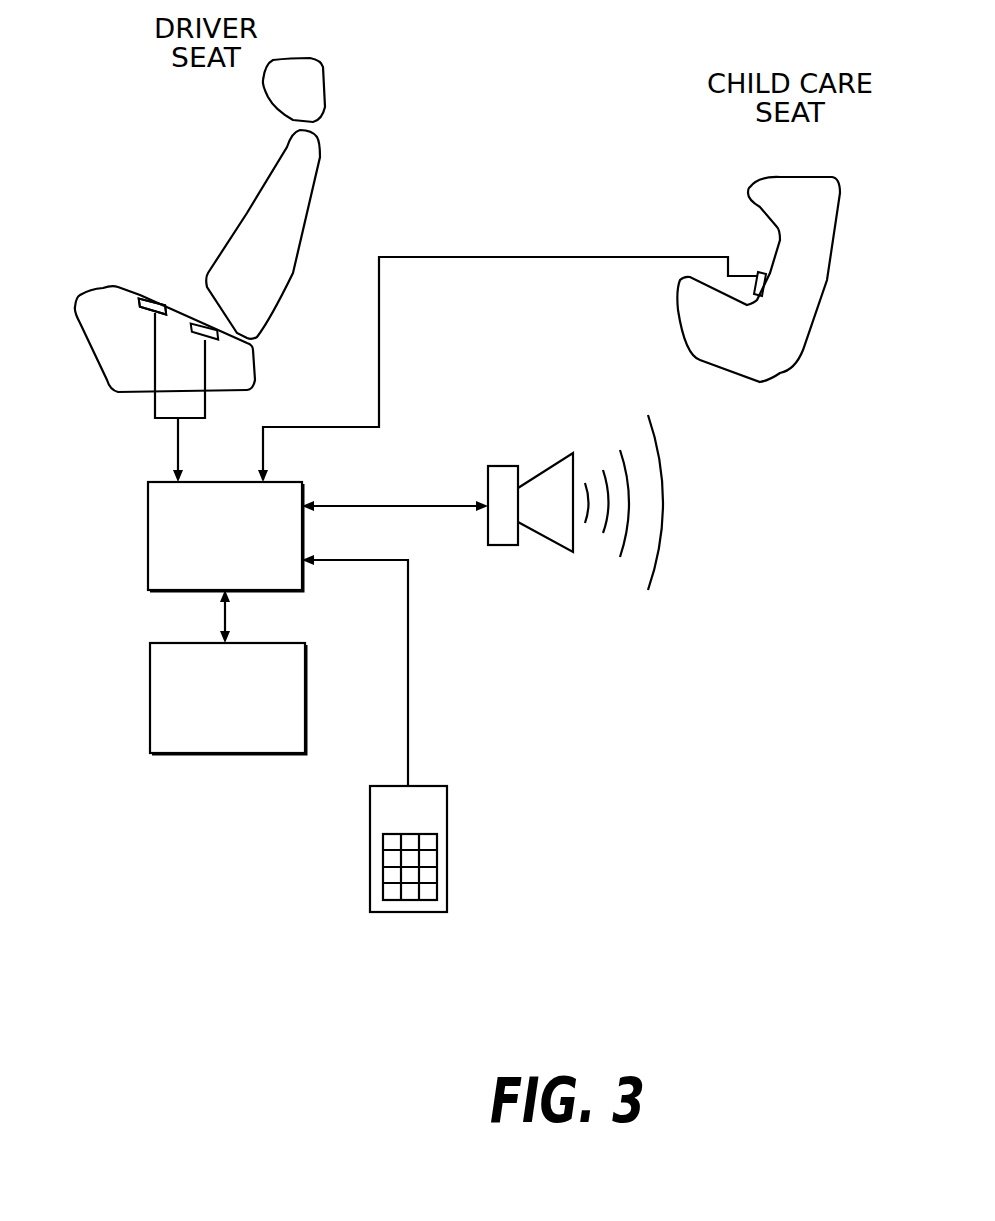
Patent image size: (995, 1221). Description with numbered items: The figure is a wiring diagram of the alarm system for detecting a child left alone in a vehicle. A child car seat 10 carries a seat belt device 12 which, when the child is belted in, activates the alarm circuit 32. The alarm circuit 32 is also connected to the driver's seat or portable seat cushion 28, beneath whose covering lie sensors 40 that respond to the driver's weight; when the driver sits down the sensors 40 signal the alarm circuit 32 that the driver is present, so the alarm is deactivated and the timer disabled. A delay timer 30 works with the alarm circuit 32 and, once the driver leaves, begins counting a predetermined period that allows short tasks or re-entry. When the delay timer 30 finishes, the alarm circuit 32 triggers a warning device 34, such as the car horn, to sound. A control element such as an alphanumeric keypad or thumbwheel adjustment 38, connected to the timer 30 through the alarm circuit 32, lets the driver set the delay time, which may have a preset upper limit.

The car seat 10 is at (806, 157).
The seat belt device 12 is at (755, 272).
The portable seat cushion 28 is at (115, 287).
The delay timer 30 is at (150, 705).
The alarm circuit 32 is at (147, 543).
The warning device 34 is at (528, 473).
The thumbwheel adjustment 38 is at (447, 850).
The sensors 40 is at (205, 322).